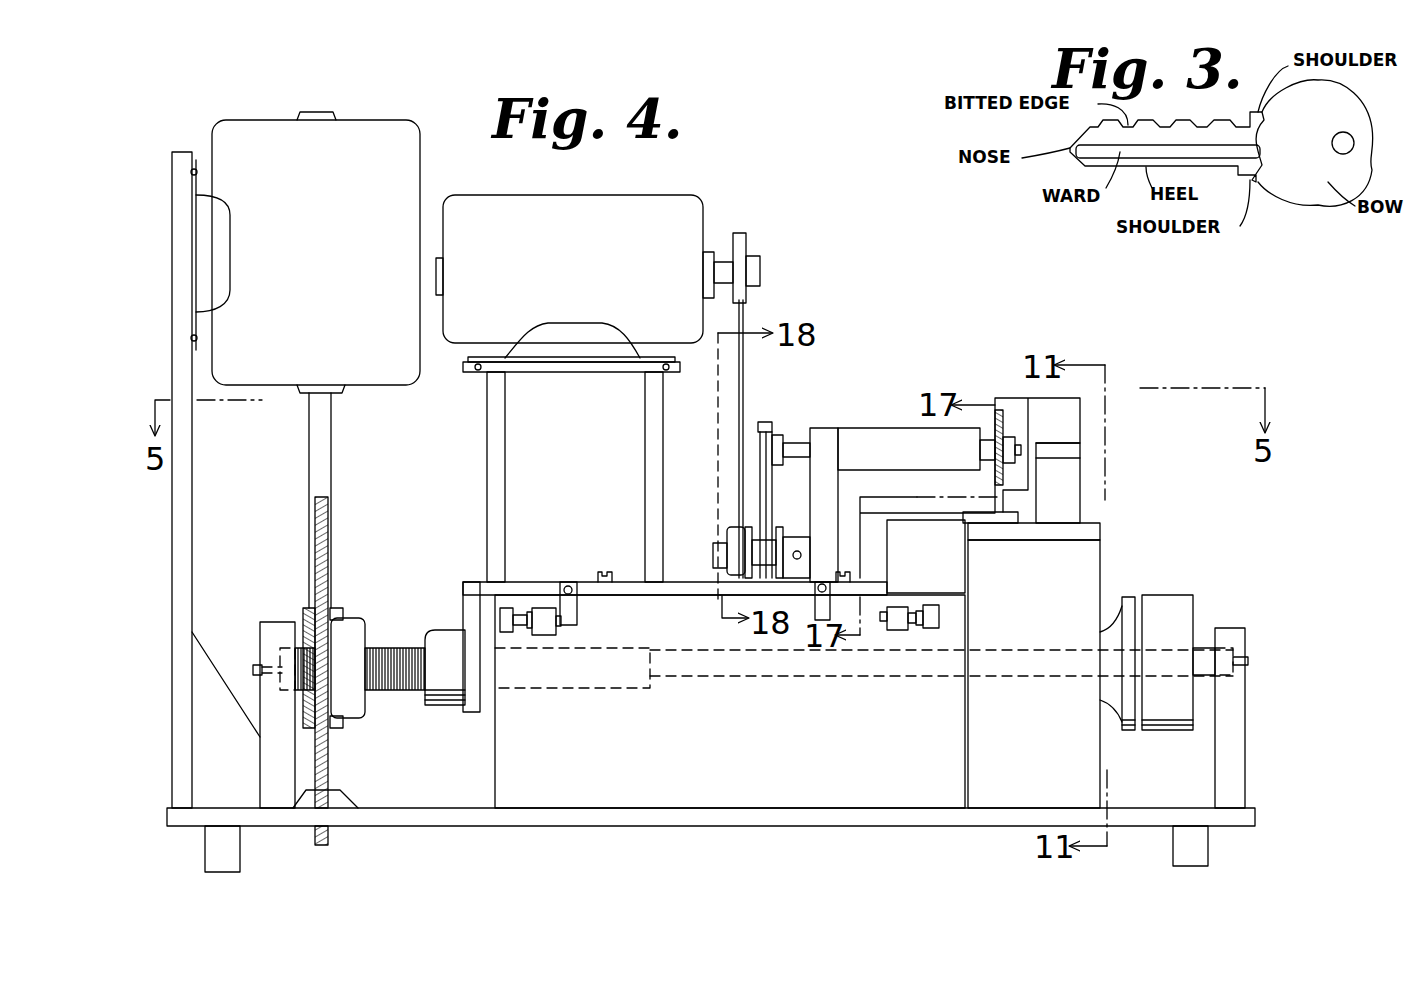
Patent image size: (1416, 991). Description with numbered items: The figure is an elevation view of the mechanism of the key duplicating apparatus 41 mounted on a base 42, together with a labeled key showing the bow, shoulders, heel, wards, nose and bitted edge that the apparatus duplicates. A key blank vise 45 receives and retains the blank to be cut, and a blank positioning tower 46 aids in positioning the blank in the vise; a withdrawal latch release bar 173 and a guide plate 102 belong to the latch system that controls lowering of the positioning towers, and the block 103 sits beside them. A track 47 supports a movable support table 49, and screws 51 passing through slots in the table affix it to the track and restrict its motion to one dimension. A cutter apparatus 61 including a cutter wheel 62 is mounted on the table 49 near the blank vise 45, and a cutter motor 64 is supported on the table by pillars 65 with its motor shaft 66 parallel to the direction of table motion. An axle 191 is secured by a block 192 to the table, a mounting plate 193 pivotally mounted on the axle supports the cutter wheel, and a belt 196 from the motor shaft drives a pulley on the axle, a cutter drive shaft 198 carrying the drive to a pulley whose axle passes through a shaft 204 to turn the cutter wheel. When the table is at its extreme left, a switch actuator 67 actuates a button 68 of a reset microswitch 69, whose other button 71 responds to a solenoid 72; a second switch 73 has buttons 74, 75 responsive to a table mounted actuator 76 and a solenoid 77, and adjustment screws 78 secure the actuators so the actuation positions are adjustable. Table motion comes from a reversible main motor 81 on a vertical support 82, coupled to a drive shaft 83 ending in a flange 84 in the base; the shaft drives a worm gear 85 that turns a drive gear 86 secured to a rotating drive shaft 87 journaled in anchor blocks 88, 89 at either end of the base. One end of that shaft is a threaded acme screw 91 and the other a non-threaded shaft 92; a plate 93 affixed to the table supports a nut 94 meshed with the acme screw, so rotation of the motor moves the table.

The key duplicating apparatus 41 is at (943, 320).
The base 42 is at (600, 822).
The key blank vise 45 is at (1076, 428).
The blank positioning tower 46 is at (1080, 476).
The track 47 is at (878, 770).
The support table 49 is at (522, 582).
The screws 51 is at (605, 572).
The cutter apparatus 61 is at (798, 262).
The cutter wheel 62 is at (994, 430).
The cutter motor 64 is at (590, 202).
The pillars 65 is at (656, 462).
The motor shaft 66 is at (722, 262).
The switch actuator 67 is at (578, 611).
The button 68 is at (550, 636).
The reset microswitch 69 is at (530, 630).
The button 71 is at (520, 626).
The solenoid 72 is at (507, 632).
The switch 73 is at (895, 632).
The button 74 is at (883, 618).
The button 75 is at (915, 627).
The actuator 76 is at (820, 622).
The solenoid 77 is at (930, 630).
The adjustment screws 78 is at (565, 582).
The main motor 81 is at (414, 143).
The vertical support 82 is at (192, 446).
The drive shaft 83 is at (331, 447).
The flange 84 is at (340, 796).
The worm gear 85 is at (338, 608).
The drive gear 86 is at (328, 520).
The rotating drive shaft 87 is at (442, 734).
The anchor block 88 is at (272, 622).
The anchor block 89 is at (1238, 628).
The acme screw 91 is at (385, 648).
The non-threaded shaft 92 is at (1205, 648).
The plate 93 is at (470, 598).
The nut 94 is at (442, 632).
The guide plate 102 is at (1097, 531).
The carriage block 103 is at (1097, 566).
The withdrawal latch release bar 173 is at (955, 524).
The axle 191 is at (714, 548).
The block 192 is at (793, 540).
The mounting plate 193 is at (825, 445).
The drive belt 196 is at (746, 320).
The cutter drive shaft 198 is at (757, 525).
The shaft 204 is at (865, 445).